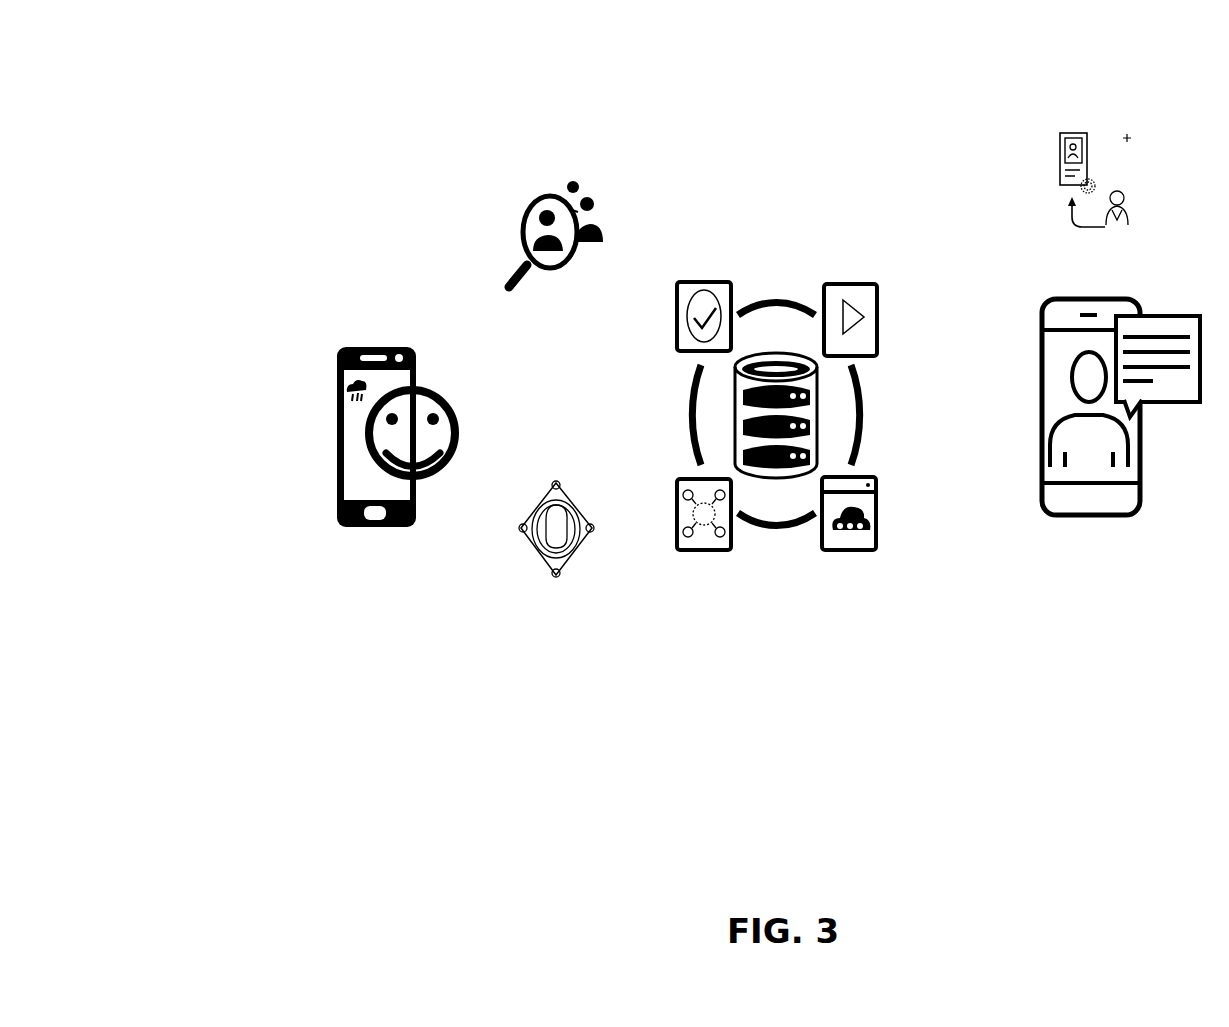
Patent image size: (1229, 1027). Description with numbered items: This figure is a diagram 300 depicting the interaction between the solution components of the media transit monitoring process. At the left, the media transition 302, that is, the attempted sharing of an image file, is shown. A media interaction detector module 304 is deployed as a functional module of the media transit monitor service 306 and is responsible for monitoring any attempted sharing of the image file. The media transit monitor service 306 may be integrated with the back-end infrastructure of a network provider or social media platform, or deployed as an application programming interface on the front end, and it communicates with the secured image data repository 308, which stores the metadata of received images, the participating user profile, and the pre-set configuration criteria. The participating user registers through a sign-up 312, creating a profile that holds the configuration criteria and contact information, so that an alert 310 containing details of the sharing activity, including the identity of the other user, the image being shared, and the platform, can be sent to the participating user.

The diagram 300 is at (242, 66).
The media transition 302 is at (360, 346).
The media interaction detector module 304 is at (526, 471).
The media transit monitor service 306 is at (505, 195).
The secured image data repository 308 is at (757, 276).
The alert 310 is at (1036, 315).
The sign-up 312 is at (1058, 178).